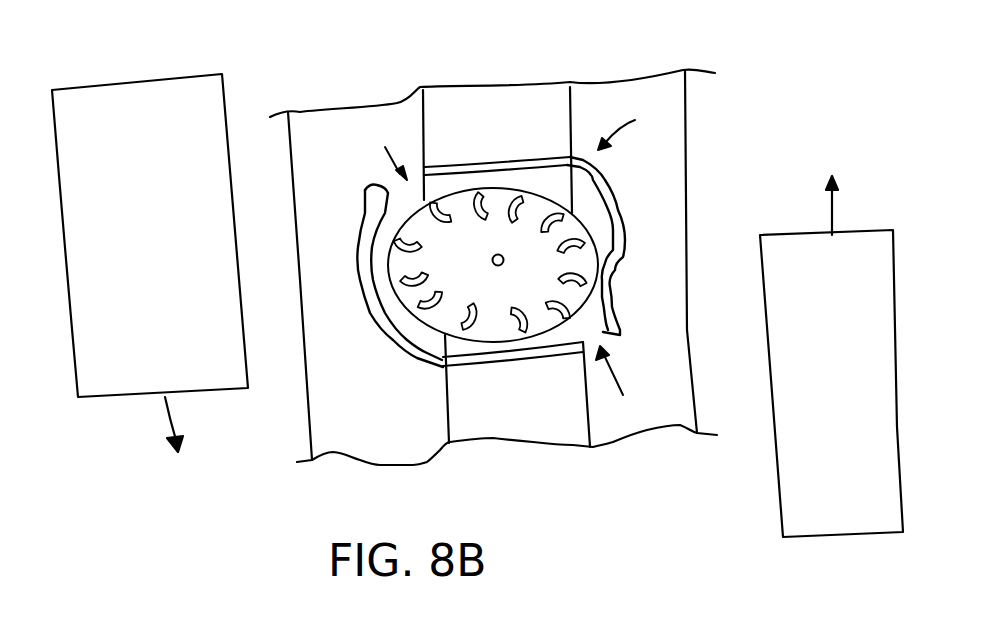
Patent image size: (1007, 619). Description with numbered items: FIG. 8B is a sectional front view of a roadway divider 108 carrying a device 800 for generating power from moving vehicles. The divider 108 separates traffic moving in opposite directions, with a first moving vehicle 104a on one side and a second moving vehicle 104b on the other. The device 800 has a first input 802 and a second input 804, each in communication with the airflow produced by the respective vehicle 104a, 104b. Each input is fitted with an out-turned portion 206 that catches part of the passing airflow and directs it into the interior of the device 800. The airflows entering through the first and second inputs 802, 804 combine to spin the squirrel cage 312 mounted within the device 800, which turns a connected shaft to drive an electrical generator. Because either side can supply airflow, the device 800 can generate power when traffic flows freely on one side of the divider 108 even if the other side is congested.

The first moving vehicle 104a is at (855, 235).
The second moving vehicle 104b is at (145, 75).
The roadway divider 108 is at (553, 100).
The out-turned portion 206 is at (370, 203).
The squirrel cage 312 is at (580, 222).
The device 800 is at (636, 130).
The first input 802 is at (633, 374).
The second input 804 is at (379, 155).